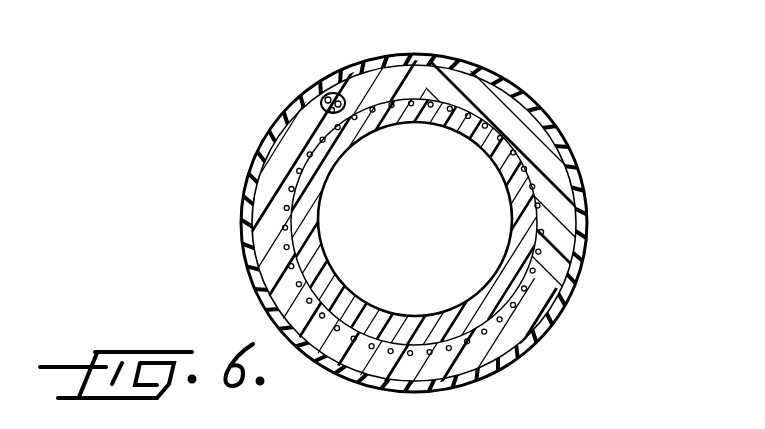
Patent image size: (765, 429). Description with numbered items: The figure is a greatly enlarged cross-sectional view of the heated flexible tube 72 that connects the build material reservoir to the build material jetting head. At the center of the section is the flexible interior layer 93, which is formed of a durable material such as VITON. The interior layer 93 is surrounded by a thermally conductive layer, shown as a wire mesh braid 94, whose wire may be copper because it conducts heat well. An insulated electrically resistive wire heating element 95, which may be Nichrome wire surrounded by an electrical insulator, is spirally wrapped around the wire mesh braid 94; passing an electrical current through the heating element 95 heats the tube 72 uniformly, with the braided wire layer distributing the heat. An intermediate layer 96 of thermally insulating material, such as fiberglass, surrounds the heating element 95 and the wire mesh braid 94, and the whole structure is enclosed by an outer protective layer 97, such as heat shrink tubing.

The flexible tube 72 is at (617, 163).
The flexible interior layer 93 is at (493, 146).
The wire mesh braid 94 is at (496, 84).
The heating element 95 is at (318, 117).
The intermediate layer 96 is at (253, 181).
The outer protective layer 97 is at (250, 267).